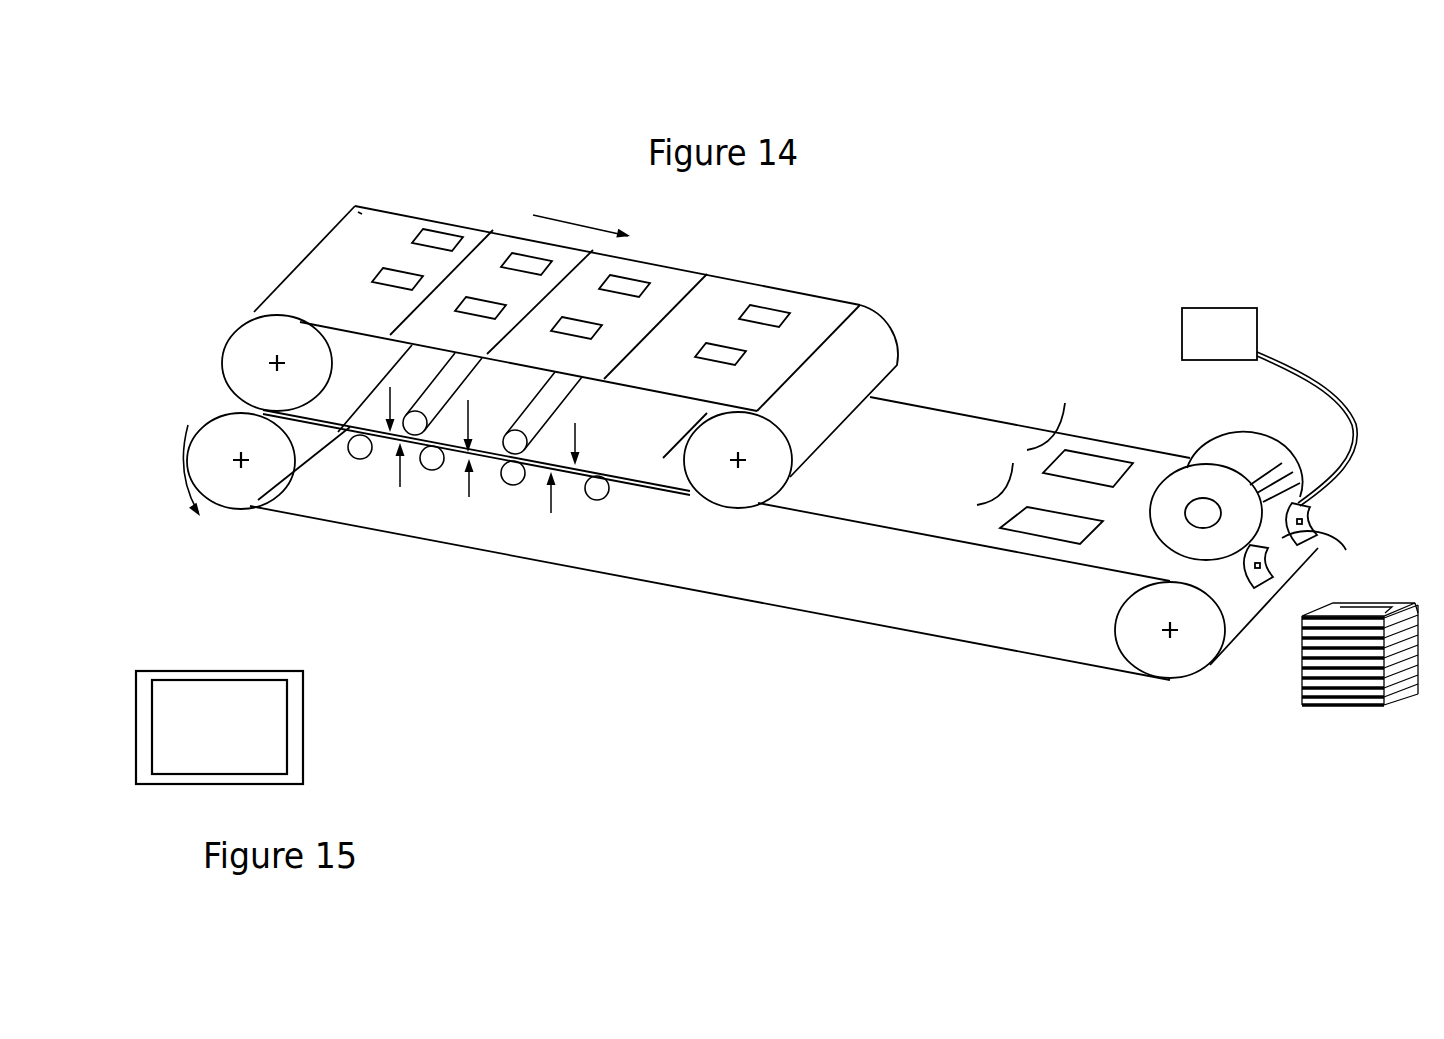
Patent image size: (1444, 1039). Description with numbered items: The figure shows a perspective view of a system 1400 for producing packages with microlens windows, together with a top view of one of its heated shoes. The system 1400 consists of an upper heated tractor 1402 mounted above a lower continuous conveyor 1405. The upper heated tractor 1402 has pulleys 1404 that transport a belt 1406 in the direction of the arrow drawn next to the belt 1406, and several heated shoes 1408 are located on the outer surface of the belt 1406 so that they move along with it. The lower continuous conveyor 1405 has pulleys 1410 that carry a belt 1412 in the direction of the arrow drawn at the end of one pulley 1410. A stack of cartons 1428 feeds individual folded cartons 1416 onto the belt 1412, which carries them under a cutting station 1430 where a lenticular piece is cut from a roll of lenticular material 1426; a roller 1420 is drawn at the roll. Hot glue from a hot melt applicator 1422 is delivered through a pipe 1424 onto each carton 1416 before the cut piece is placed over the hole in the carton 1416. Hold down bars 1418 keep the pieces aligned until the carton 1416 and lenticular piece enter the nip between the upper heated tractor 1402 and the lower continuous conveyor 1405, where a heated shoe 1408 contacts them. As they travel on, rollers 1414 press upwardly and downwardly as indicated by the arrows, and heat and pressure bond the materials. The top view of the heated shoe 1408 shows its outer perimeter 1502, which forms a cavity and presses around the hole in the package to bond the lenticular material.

In FIG. 14, the system 1400 is at (999, 256).
In FIG. 14, the upper heated tractor 1402 is at (805, 277).
In FIG. 14, the pulleys 1404 is at (262, 350).
In FIG. 14, the lower continuous conveyor 1405 is at (405, 561).
In FIG. 14, the belt 1406 is at (372, 233).
In FIG. 14, the heated shoe 1408 is at (514, 256).
In FIG. 15, the heated shoe 1408 is at (330, 731).
In FIG. 14, the pulleys 1410 is at (213, 440).
In FIG. 14, the belt 1412 is at (952, 435).
In FIG. 14, the rollers 1414 is at (575, 402).
In FIG. 14, the carton 1416 is at (1075, 534).
In FIG. 14, the hold down bars 1418 is at (1072, 410).
In FIG. 14, the drive roller 1420 is at (1178, 478).
In FIG. 14, the hot melt applicator 1422 is at (1245, 323).
In FIG. 14, the pipe 1424 is at (1303, 373).
In FIG. 14, the roll of lenticular material 1426 is at (1283, 545).
In FIG. 14, the stack of cartons 1428 is at (1357, 722).
In FIG. 14, the cutting station 1430 is at (1100, 550).
In FIG. 15, the outer perimeter 1502 is at (150, 776).